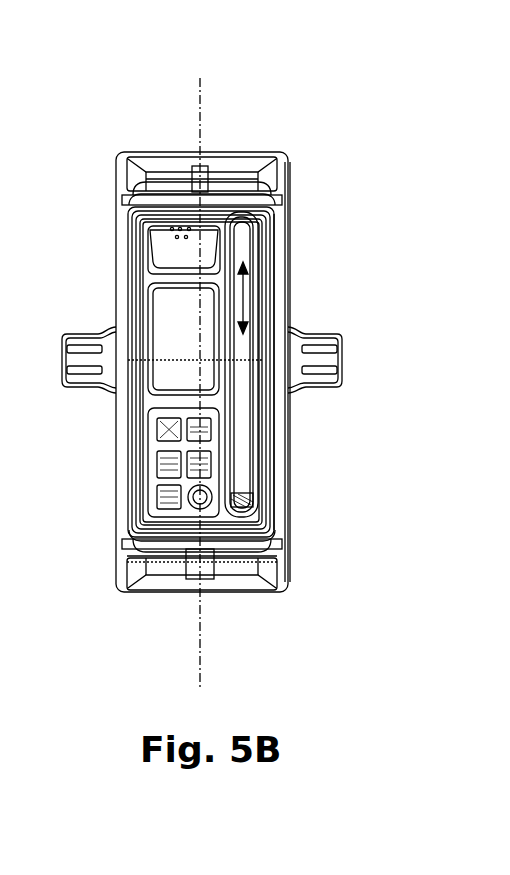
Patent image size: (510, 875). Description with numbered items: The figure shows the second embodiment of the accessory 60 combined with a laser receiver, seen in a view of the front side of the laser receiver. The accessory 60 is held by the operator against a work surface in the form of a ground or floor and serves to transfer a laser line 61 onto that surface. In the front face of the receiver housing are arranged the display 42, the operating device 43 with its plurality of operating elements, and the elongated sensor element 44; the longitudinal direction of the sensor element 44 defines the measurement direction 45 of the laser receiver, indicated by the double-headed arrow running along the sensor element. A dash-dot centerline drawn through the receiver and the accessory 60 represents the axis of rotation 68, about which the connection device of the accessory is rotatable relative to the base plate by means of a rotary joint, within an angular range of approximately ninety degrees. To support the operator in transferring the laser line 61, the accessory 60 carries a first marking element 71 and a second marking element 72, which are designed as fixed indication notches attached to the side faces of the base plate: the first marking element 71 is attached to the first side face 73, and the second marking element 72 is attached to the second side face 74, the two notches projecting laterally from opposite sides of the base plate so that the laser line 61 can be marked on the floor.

The accessory 60 is at (142, 98).
The axis of rotation 68 is at (200, 106).
The first side face 73 is at (106, 224).
The second side face 74 is at (296, 218).
The display 42 is at (162, 300).
The measurement direction 45 is at (243, 302).
The laser line 61 is at (243, 365).
The sensor element 44 is at (247, 486).
The operating device 43 is at (168, 488).
The first marking element 71 is at (82, 380).
The second marking element 72 is at (318, 380).